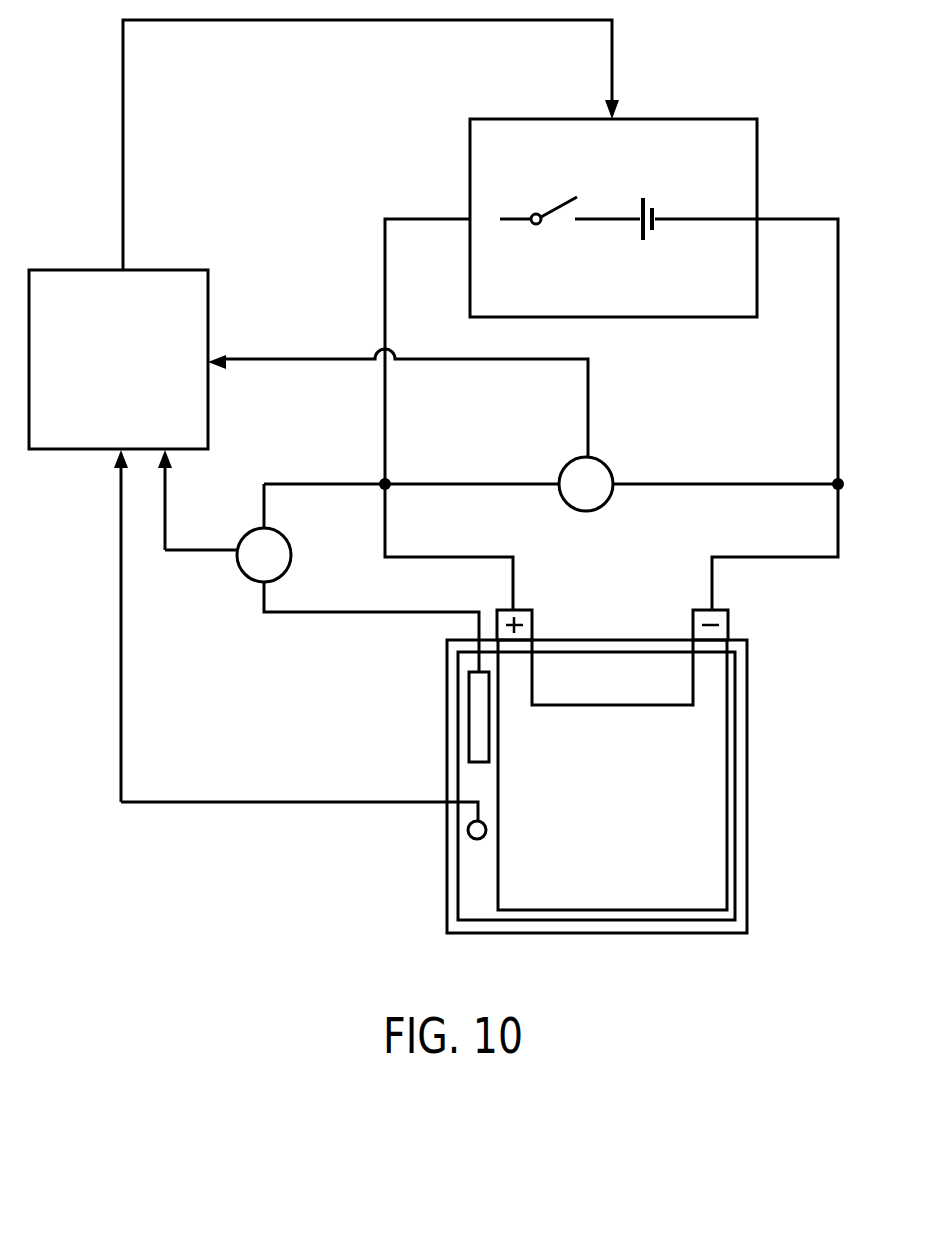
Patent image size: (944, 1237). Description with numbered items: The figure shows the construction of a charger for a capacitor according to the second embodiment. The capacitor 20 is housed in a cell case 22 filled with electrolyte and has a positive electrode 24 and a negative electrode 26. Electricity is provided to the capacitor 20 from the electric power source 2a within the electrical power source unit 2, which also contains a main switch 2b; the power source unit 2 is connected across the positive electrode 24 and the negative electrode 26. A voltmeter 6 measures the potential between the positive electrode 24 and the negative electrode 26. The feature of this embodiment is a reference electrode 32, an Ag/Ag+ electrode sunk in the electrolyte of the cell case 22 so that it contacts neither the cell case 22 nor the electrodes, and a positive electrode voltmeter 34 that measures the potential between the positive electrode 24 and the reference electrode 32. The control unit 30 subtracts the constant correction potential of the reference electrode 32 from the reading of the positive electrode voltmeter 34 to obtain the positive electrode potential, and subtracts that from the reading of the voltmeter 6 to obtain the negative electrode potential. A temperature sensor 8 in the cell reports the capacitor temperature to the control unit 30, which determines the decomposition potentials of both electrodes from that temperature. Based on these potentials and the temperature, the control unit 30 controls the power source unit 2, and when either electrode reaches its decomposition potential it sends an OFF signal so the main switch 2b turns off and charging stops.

The electrical power source unit 2 is at (684, 114).
The electric power source 2a is at (648, 236).
The main switch 2b is at (558, 225).
The voltmeter 6 is at (600, 462).
The temperature sensor 8 is at (468, 832).
The capacitor 20 is at (598, 946).
The cell case 22 is at (750, 845).
The positive electrode 24 is at (525, 607).
The negative electrode 26 is at (716, 607).
The control unit 30 is at (183, 270).
The reference electrode 32 is at (469, 710).
The positive electrode voltmeter 34 is at (246, 573).